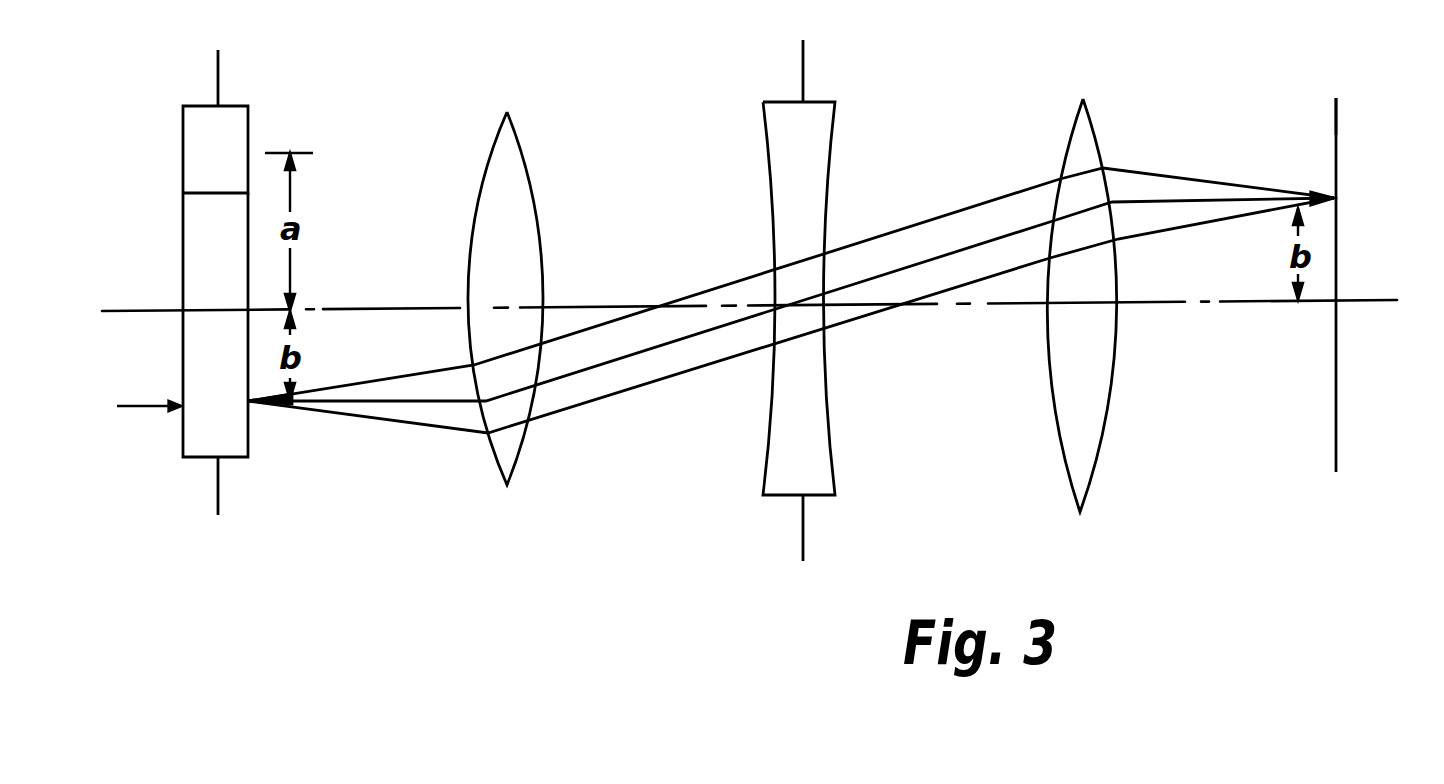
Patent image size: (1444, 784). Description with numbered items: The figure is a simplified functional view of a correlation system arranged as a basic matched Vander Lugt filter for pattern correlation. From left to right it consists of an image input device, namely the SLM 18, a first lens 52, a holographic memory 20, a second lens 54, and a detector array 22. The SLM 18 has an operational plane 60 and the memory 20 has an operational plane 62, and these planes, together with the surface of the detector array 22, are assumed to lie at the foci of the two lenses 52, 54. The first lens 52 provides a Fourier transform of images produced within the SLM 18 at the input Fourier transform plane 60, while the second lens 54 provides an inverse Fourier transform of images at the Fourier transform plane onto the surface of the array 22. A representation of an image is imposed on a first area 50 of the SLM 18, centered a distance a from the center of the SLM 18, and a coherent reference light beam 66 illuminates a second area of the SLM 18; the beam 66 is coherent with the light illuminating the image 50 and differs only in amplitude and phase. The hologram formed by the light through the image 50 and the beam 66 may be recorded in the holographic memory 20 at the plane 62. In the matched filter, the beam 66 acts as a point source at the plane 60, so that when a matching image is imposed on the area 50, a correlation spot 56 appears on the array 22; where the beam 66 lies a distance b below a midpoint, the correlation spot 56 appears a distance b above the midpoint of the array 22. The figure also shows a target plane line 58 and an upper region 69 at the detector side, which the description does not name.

The SLM 18 is at (183, 457).
The holographic memory 20 is at (763, 495).
The detector array 22 is at (1286, 383).
The first area 50 is at (272, 125).
The lens 52 is at (509, 112).
The second lens 54 is at (1085, 99).
The correlation spot 56 is at (1338, 200).
The target plane / screen 58 is at (1336, 418).
The operational plane 60 is at (218, 66).
The operational plane 62 is at (803, 66).
The light beam 66 is at (146, 406).
The target surface 69 is at (1336, 130).